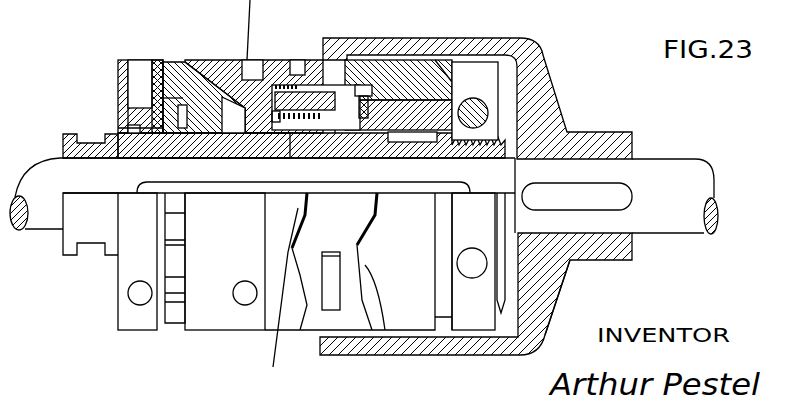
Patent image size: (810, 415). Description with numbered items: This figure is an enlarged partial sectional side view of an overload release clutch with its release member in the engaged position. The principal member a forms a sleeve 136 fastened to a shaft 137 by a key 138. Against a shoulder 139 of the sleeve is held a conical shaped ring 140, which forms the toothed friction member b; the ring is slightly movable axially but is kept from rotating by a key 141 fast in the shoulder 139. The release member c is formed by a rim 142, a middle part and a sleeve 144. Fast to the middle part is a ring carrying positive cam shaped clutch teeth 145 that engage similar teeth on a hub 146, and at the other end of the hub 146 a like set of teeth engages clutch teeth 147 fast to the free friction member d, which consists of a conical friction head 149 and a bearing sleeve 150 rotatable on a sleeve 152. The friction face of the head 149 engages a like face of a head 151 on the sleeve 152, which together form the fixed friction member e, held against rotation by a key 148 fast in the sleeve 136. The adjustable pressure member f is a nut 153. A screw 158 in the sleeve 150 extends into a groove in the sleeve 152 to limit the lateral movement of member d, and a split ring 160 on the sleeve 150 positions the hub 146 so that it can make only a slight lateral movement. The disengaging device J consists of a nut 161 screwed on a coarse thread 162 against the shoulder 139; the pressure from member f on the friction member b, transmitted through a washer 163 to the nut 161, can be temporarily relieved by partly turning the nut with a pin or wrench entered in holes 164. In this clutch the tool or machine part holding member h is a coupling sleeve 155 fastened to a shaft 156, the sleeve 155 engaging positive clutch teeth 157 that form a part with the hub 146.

The sleeve 136 is at (63, 143).
The shaft 137 is at (41, 228).
The key 138 is at (137, 191).
The shoulder 139 is at (150, 98).
The conical shaped ring 140 is at (170, 62).
The key 141 is at (183, 118).
The rim 142 is at (207, 58).
The sleeve 144 is at (275, 130).
The positive cam shaped clutch teeth 145 is at (310, 293).
The hub 146 is at (317, 323).
The clutch teeth 147 is at (380, 322).
The key 148 is at (414, 169).
The conical friction head 149 is at (428, 322).
The bearing sleeve 150 is at (335, 97).
The head 151 is at (453, 80).
The sleeve 152 is at (419, 142).
The nut 153 is at (498, 73).
The coupling sleeve 155 is at (524, 352).
The shaft 156 is at (685, 162).
The positive clutch teeth 157 is at (330, 40).
The screw 158 is at (366, 85).
The split ring 160 is at (282, 87).
The nut 161 is at (122, 313).
The coarse thread 162 is at (118, 128).
The washer 163 is at (155, 62).
The holes 164 is at (128, 60).
The disengaging device J is at (118, 70).
The principal member a is at (68, 255).
The toothed friction member b is at (173, 320).
The release member c is at (218, 328).
The free friction member d is at (410, 322).
The fixed friction member e is at (440, 322).
The adjustable pressure member f is at (500, 93).
The tool or machine-part holding member h is at (560, 292).